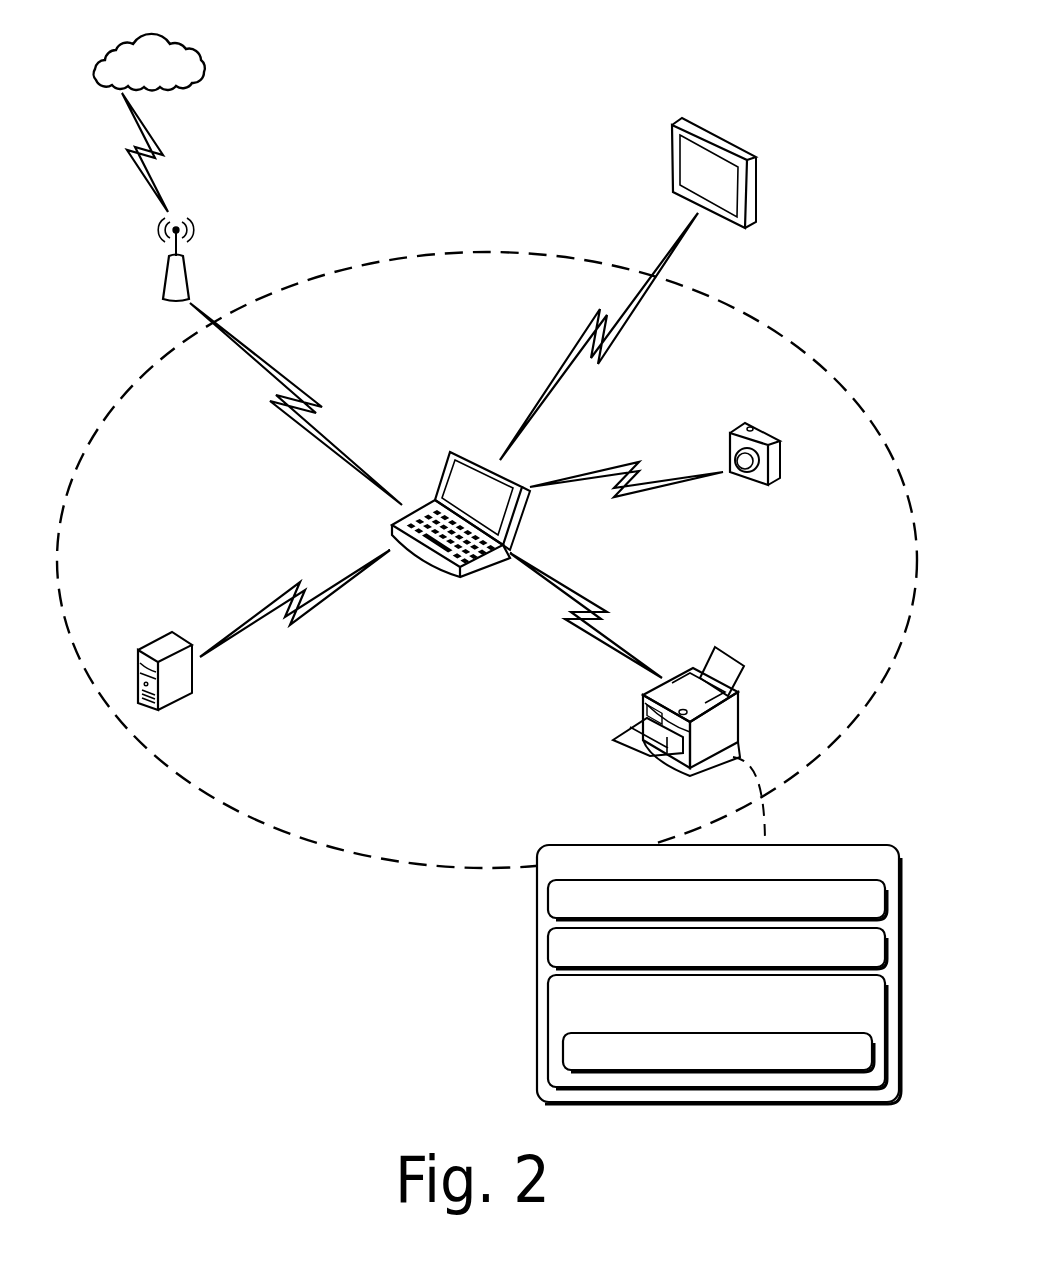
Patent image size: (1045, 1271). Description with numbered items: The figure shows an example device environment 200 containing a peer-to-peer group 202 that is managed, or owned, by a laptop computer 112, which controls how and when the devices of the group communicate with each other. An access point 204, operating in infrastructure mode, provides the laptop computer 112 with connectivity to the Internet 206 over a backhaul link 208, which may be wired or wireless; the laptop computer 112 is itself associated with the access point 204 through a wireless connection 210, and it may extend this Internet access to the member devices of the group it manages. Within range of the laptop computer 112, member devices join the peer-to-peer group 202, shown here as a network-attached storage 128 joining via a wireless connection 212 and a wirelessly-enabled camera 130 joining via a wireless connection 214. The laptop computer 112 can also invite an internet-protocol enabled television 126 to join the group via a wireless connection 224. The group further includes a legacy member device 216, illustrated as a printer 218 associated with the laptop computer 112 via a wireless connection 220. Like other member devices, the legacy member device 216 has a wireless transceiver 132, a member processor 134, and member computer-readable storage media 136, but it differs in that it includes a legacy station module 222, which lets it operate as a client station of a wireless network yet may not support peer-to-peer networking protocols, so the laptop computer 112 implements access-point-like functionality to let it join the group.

The device environment 200 is at (791, 62).
The peer-to-peer group 202 is at (480, 253).
The access point 204 is at (183, 267).
The Internet 206 is at (140, 37).
The backhaul link 208 is at (152, 192).
The wireless connection 210 is at (257, 363).
The laptop computer 112 is at (470, 453).
The internet-protocol enabled television 126 is at (742, 145).
The wireless connection 224 is at (626, 318).
The wirelessly-enabled camera 130 is at (777, 438).
The wireless connection 214 is at (680, 487).
The wireless connection 220 is at (557, 585).
The printer 218 is at (730, 688).
The wireless connection 212 is at (328, 590).
The network-attached storage 128 is at (183, 697).
The legacy member device 216 is at (883, 872).
The wireless transceiver 132 is at (870, 906).
The member processor 134 is at (870, 956).
The member computer-readable storage media 136 is at (870, 1004).
The legacy station module 222 is at (856, 1062).